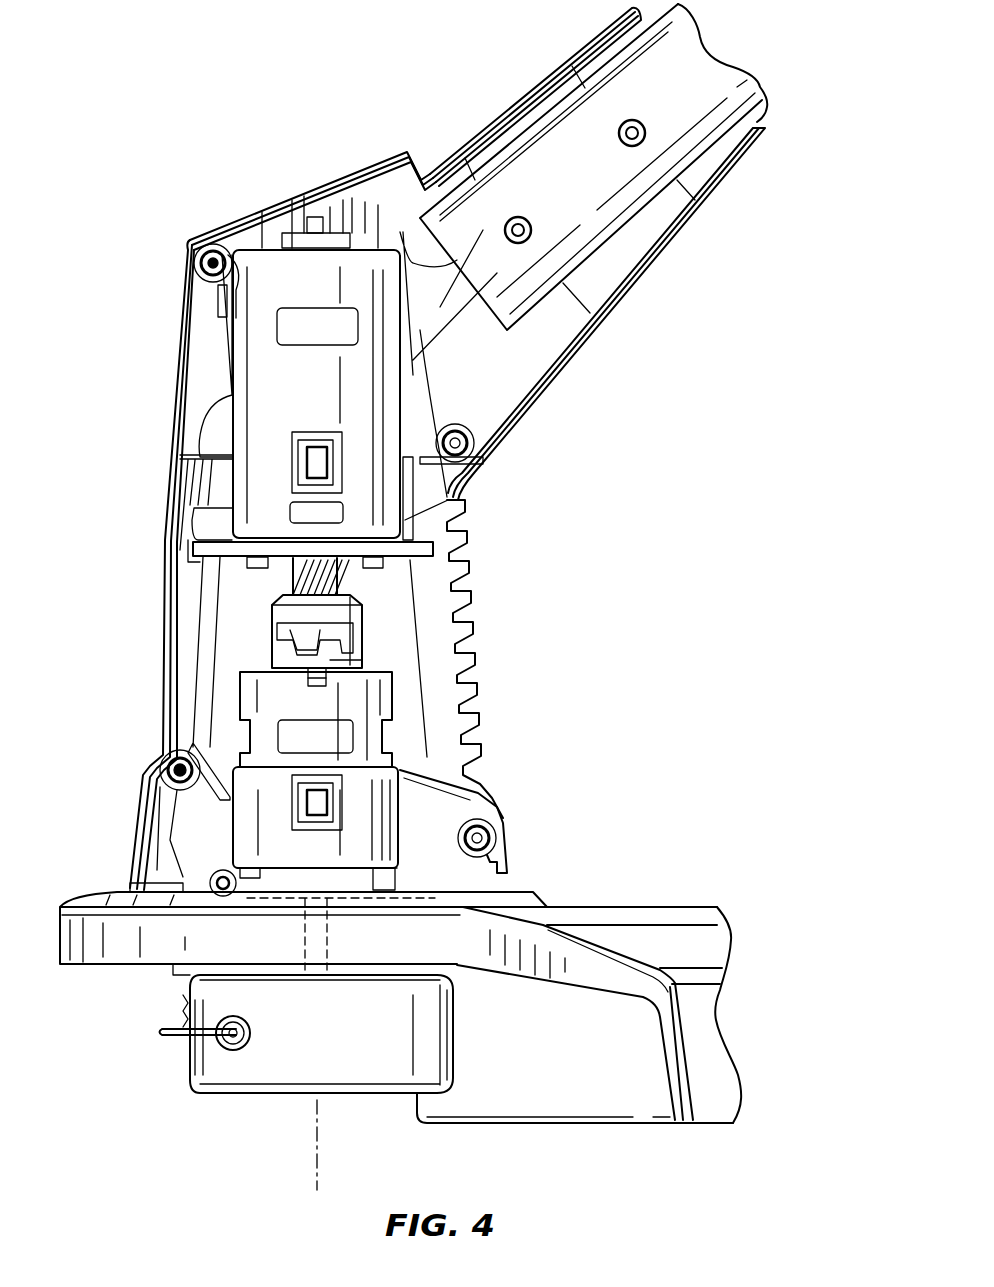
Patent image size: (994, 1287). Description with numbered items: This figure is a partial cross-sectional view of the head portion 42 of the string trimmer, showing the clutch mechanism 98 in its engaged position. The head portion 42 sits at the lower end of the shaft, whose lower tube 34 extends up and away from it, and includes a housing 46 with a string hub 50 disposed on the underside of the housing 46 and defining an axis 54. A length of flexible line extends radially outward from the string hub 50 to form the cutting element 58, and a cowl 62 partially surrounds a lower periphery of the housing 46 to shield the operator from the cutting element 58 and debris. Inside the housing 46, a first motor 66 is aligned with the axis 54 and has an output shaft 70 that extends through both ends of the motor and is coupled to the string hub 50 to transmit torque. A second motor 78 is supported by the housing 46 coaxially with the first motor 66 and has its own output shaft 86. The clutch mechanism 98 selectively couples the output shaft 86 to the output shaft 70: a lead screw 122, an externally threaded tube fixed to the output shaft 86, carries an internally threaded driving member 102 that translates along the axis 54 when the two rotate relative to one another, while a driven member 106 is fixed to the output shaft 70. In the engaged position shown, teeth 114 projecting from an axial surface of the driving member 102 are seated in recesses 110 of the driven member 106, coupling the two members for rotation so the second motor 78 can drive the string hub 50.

The lower tube 34 is at (757, 123).
The head portion 42 is at (146, 190).
The housing 46 is at (290, 200).
The string hub 50 is at (222, 1095).
The axis 54 is at (315, 1140).
The cutting element 58 is at (163, 1035).
The cowl 62 is at (635, 908).
The first motor 66 is at (240, 712).
The output shaft 70 is at (320, 688).
The second motor 78 is at (228, 412).
The output shaft 86 is at (430, 540).
The clutch mechanism 98 is at (385, 633).
The driving member 102 is at (322, 618).
The driven member 106 is at (370, 650).
The recesses 110 is at (290, 655).
The teeth 114 is at (276, 638).
The lead screw 122 is at (355, 578).